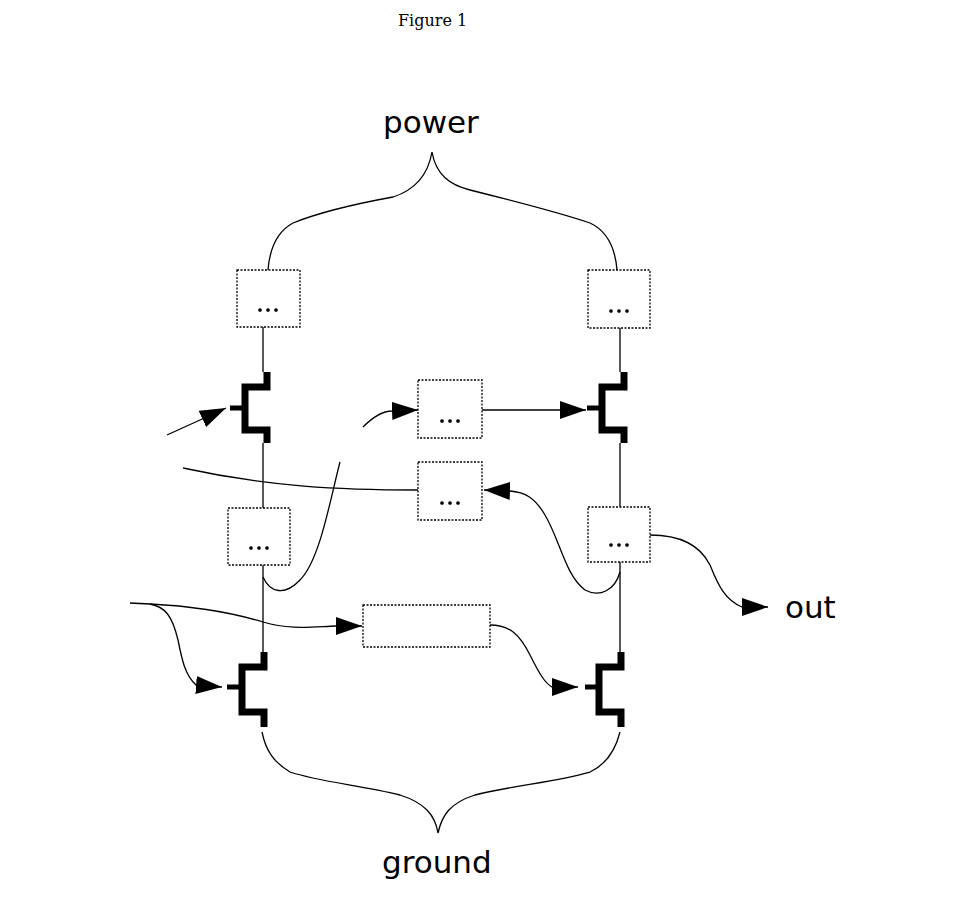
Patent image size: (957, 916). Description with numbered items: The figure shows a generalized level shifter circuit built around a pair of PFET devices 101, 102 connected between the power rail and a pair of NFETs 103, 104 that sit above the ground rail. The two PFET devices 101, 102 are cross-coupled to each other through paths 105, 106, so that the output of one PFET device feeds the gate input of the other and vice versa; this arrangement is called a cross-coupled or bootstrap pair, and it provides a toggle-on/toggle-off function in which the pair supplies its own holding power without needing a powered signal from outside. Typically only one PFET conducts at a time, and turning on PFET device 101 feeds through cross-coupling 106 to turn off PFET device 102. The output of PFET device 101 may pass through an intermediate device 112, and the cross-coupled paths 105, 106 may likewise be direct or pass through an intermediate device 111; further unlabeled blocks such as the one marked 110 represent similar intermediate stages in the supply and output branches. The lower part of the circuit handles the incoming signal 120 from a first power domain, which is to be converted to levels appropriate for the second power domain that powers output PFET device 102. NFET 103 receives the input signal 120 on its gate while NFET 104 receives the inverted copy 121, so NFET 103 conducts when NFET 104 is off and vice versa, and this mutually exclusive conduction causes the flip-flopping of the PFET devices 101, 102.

The PFET device 101 is at (232, 388).
The PFET device 102 is at (638, 378).
The NFET 103 is at (232, 708).
The NFET 104 is at (632, 710).
The cross-coupled path 105 is at (282, 449).
The cross-coupled path 106 is at (340, 500).
The circuit block 110 is at (237, 300).
The intermediate device 111 is at (453, 380).
The intermediate device 112 is at (228, 538).
The incoming signal 120 is at (72, 605).
The inverted copy 121 is at (415, 648).